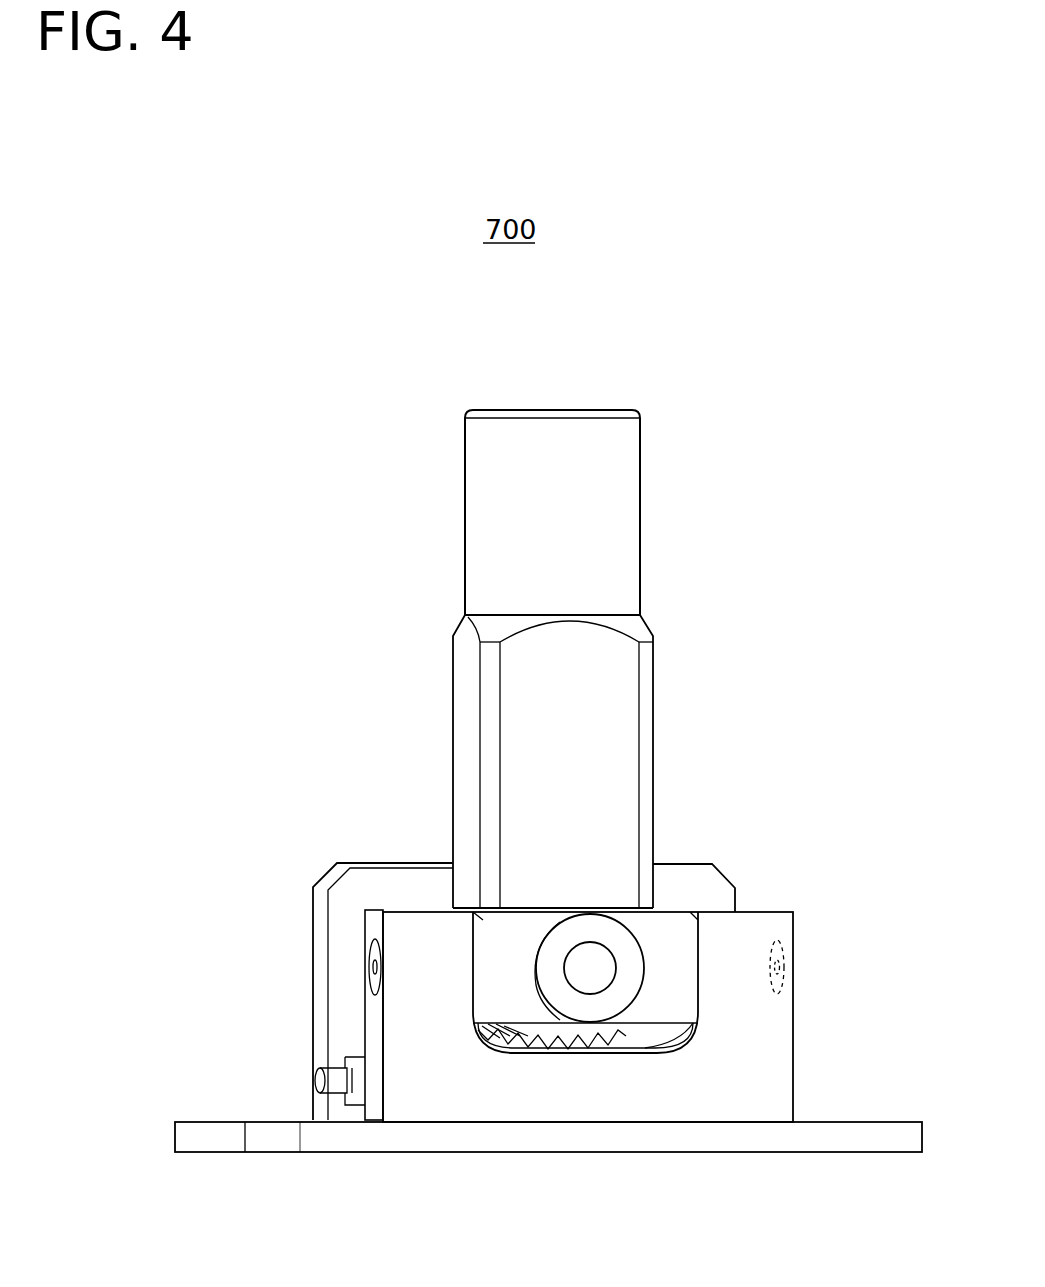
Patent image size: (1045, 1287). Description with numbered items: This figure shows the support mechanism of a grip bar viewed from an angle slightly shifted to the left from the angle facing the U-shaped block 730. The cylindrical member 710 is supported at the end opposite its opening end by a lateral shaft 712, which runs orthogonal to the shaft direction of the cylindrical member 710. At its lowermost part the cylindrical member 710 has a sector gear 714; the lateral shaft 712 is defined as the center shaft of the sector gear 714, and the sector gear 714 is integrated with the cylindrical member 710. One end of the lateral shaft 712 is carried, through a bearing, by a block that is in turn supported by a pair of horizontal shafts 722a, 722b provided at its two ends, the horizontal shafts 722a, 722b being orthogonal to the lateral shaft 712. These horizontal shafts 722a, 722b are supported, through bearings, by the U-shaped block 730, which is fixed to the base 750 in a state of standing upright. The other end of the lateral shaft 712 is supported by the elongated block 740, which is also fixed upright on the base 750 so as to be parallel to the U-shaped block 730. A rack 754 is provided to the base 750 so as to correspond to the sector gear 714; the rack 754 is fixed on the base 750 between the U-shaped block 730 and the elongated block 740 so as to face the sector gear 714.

The cylindrical member 710 is at (622, 494).
The lateral shaft 712 is at (625, 982).
The sector gear 714 is at (600, 1043).
The horizontal shaft 722a is at (375, 967).
The horizontal shaft 722b is at (800, 940).
The U-shaped block 730 is at (743, 928).
The elongated block 740 is at (660, 872).
The base 750 is at (833, 1133).
The rack 754 is at (347, 1062).